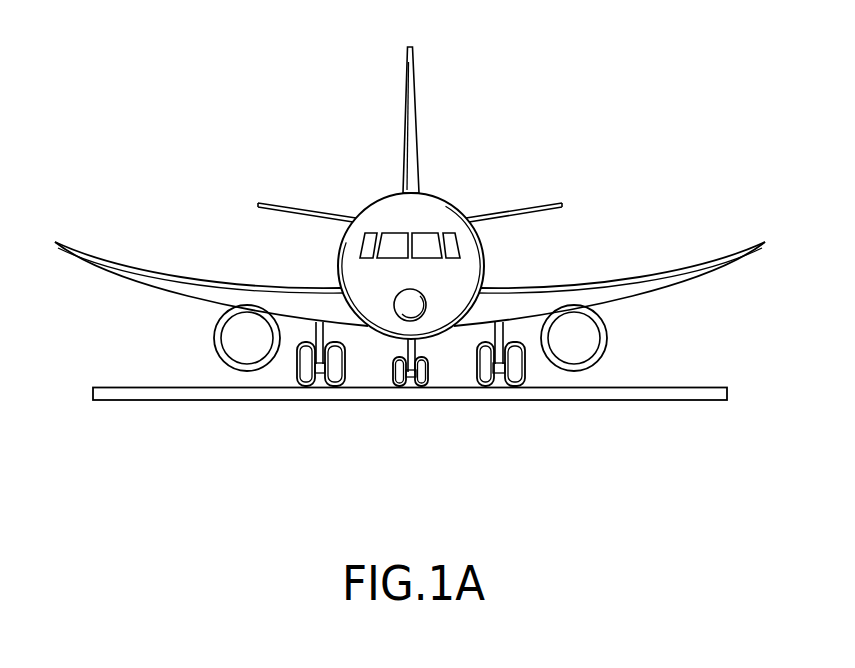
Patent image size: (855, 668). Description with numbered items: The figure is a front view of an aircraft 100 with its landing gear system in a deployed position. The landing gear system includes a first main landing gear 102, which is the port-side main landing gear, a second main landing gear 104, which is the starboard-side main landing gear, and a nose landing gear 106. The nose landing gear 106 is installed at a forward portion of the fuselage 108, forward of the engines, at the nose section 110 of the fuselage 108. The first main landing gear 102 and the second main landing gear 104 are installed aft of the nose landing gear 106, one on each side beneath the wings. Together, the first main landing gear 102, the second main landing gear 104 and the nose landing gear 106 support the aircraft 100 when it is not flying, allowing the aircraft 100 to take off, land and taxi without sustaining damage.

The aircraft 100 is at (296, 135).
The first main landing gear 102 is at (525, 380).
The second main landing gear 104 is at (313, 380).
The nose landing gear 106 is at (432, 380).
The fuselage 108 is at (434, 195).
The nose section 110 is at (388, 324).